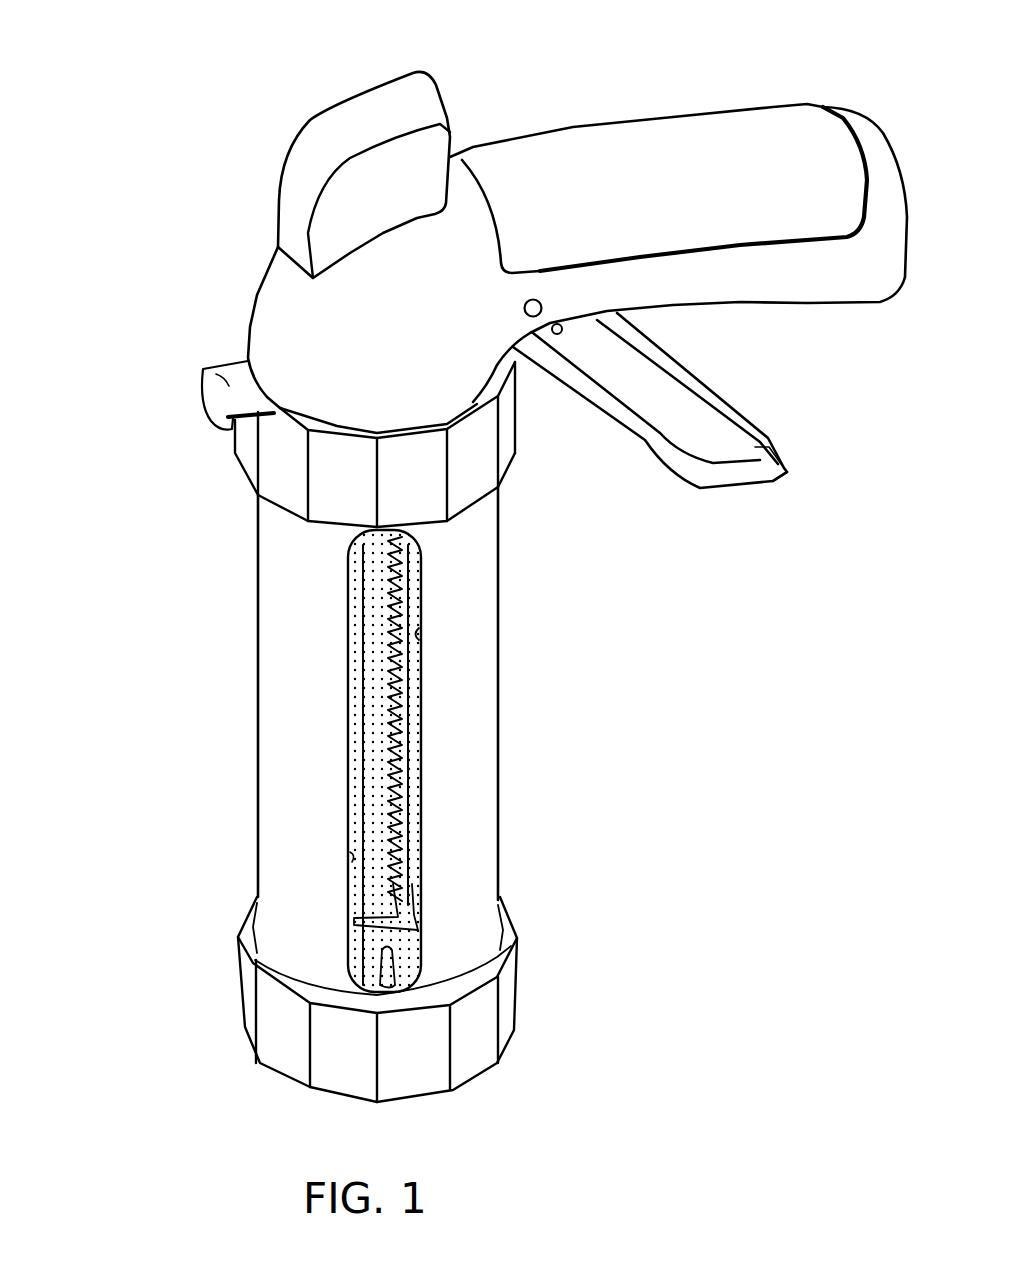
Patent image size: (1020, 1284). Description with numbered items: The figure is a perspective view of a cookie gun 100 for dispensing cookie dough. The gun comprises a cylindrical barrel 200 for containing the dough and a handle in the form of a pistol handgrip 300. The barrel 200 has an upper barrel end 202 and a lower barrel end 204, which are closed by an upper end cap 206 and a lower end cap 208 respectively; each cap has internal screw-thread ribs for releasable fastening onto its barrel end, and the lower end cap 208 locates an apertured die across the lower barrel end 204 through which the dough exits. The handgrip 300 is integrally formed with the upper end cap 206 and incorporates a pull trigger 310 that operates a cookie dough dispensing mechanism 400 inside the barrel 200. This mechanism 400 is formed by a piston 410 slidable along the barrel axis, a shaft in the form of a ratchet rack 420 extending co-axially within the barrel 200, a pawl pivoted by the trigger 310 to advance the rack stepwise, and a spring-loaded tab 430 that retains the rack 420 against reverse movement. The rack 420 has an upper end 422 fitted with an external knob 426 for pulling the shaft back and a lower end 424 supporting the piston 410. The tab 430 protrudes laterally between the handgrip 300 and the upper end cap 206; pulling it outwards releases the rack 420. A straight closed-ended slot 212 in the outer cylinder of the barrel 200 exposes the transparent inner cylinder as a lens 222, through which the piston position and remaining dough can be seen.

The cookie gun 100 is at (150, 178).
The cylindrical barrel 200 is at (388, 765).
The upper barrel end 202 is at (477, 560).
The lower barrel end 204 is at (483, 957).
The upper end cap 206 is at (258, 462).
The lower end cap 208 is at (340, 1070).
The slot 212 is at (419, 634).
The lens 222 is at (346, 631).
The pistol handgrip 300 is at (714, 437).
The pull trigger 310 is at (718, 478).
The cookie dough dispensing mechanism 400 is at (270, 772).
The piston 410 is at (373, 968).
The ratchet rack 420 is at (378, 773).
The upper end 422 is at (372, 555).
The lower end 424 is at (373, 908).
The knob 426 is at (332, 128).
The spring-loaded tab 430 is at (207, 370).